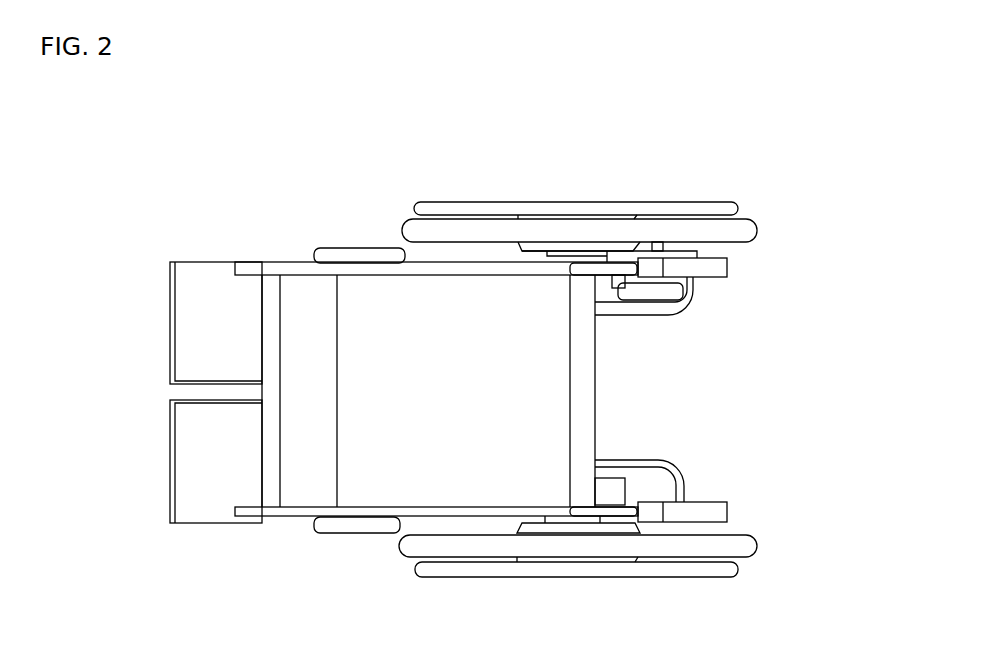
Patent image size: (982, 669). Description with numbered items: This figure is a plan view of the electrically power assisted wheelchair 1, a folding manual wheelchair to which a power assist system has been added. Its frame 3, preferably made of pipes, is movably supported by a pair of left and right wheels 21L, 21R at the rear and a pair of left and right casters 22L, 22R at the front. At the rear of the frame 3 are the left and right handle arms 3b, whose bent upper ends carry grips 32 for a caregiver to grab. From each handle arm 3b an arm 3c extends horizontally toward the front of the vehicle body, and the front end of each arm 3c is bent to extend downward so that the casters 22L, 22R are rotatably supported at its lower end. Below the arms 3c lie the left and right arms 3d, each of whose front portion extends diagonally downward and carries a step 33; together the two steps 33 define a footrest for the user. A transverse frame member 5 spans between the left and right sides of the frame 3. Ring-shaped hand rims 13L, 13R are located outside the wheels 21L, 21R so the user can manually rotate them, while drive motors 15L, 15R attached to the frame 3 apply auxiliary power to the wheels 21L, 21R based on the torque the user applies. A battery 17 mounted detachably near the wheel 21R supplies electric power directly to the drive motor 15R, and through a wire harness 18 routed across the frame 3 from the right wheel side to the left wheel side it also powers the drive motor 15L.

The electrically power assisted wheelchair 1 is at (570, 183).
The frame 3 is at (410, 518).
The handle arm 3b is at (582, 269).
The arm 3c is at (444, 268).
The arm 3d is at (275, 262).
The frame cross member 5 is at (337, 373).
The hand rim 13R is at (706, 201).
The hand rim 13L is at (656, 578).
The drive motor 15R is at (595, 313).
The drive motor 15L is at (612, 478).
The battery 17 is at (650, 298).
The wire harness 18 is at (640, 462).
The wheel 21R is at (757, 230).
The wheel 21L is at (757, 546).
The caster 22R is at (369, 247).
The caster 22L is at (343, 533).
The grip 32 is at (711, 278).
The step 33 is at (194, 261).